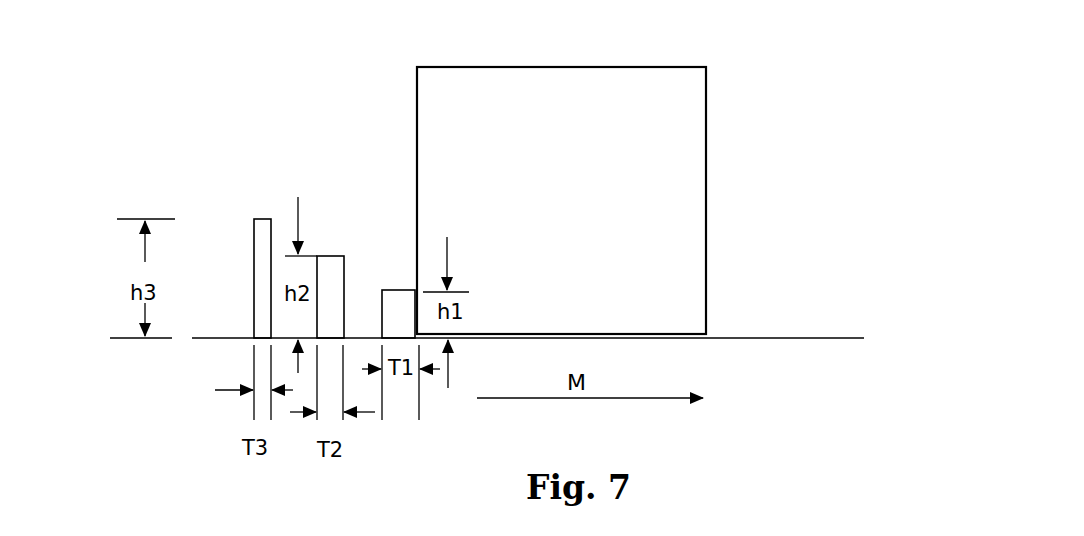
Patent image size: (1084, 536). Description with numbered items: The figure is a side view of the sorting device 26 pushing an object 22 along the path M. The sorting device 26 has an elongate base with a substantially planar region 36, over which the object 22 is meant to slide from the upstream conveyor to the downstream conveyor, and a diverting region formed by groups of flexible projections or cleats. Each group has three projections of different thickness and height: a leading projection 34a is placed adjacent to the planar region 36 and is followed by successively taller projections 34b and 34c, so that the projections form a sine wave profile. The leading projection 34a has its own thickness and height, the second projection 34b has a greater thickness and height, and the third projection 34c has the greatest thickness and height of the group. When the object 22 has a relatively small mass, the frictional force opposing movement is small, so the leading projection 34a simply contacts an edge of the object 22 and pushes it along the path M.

The object 22 is at (693, 83).
The sorting device 26 is at (301, 187).
The leading projection 34a is at (404, 313).
The second projection 34b is at (334, 268).
The third projection 34c is at (264, 228).
The planar region 36 is at (777, 338).